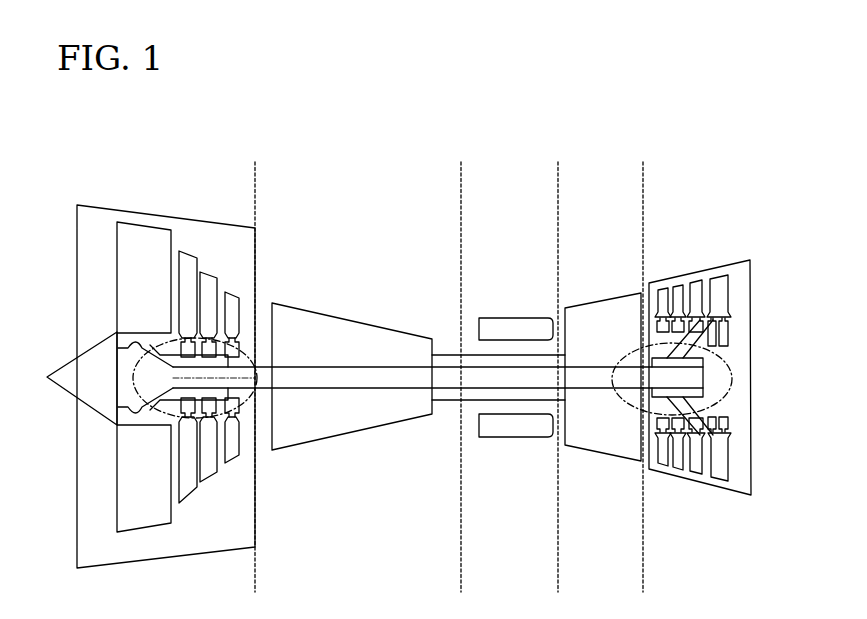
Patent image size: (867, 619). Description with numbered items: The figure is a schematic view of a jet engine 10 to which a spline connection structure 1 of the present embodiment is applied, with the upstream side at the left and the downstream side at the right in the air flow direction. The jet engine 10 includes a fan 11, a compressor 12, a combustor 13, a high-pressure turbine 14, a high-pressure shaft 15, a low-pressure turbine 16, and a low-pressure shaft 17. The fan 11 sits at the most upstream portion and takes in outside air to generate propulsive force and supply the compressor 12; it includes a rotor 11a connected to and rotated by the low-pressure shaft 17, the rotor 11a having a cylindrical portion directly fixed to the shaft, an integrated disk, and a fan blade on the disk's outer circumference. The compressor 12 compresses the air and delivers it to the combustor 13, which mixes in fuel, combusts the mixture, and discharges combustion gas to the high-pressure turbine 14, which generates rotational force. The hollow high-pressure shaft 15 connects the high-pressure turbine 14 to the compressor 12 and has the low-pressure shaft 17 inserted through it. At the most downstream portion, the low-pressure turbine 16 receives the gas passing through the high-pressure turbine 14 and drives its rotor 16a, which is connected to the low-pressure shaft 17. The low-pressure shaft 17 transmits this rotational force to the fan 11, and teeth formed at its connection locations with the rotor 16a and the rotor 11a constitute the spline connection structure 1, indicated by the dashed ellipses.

The spline connection structure 1 is at (128, 391).
The jet engine 10 is at (614, 137).
The fan 11 is at (170, 202).
The rotor 11a is at (127, 258).
The compressor 12 is at (367, 309).
The combustor 13 is at (513, 312).
The high-pressure turbine 14 is at (610, 289).
The high-pressure shaft 15 is at (448, 353).
The low-pressure turbine 16 is at (713, 261).
The rotor 16a is at (718, 343).
The low-pressure shaft 17 is at (256, 366).